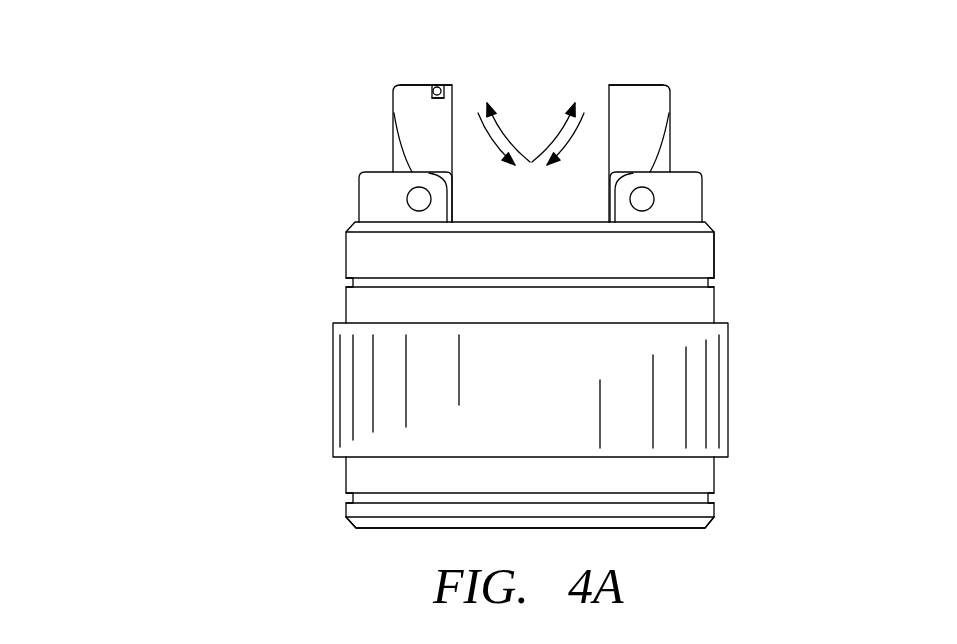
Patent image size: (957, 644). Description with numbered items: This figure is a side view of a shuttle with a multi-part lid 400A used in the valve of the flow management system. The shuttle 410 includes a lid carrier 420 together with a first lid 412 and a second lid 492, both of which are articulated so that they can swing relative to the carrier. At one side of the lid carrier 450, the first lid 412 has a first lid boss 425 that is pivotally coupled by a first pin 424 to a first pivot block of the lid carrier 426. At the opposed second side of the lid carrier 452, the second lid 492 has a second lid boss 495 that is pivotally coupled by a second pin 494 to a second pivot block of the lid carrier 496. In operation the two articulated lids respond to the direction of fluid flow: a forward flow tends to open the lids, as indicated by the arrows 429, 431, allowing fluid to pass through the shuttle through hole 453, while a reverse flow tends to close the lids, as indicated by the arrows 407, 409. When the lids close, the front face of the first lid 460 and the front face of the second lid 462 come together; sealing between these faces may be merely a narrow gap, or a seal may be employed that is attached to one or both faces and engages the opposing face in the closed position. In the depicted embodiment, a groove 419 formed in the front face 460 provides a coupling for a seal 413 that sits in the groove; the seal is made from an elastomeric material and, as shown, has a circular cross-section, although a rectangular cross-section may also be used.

The shuttle with a multi-part lid 400A is at (240, 138).
The shuttle 410 is at (287, 330).
The first lid 412 is at (388, 92).
The seal 413 is at (437, 86).
The groove 419 is at (442, 103).
The lid carrier 420 is at (327, 423).
The first pin 424 is at (414, 198).
The first lid boss 425 is at (392, 157).
The first pivot block of the lid carrier 426 is at (377, 185).
The opening of the first lid under forward flow 429 is at (515, 120).
The opening of the second lid under forward flow 431 is at (550, 120).
The closing of the first lid under reverse flow 407 is at (493, 133).
The closing of the second lid under reverse flow 409 is at (569, 133).
The one side of the lid carrier 450 is at (346, 245).
The opposed second side of the lid carrier 452 is at (714, 245).
The shuttle through hole 453 is at (373, 528).
The front face of the first articulated lid 460 is at (413, 85).
The front face of the second articulated lid 462 is at (635, 85).
The second lid 492 is at (675, 92).
The second pin 494 is at (645, 199).
The second lid boss 495 is at (668, 157).
The second pivot block of the lid carrier 496 is at (683, 185).